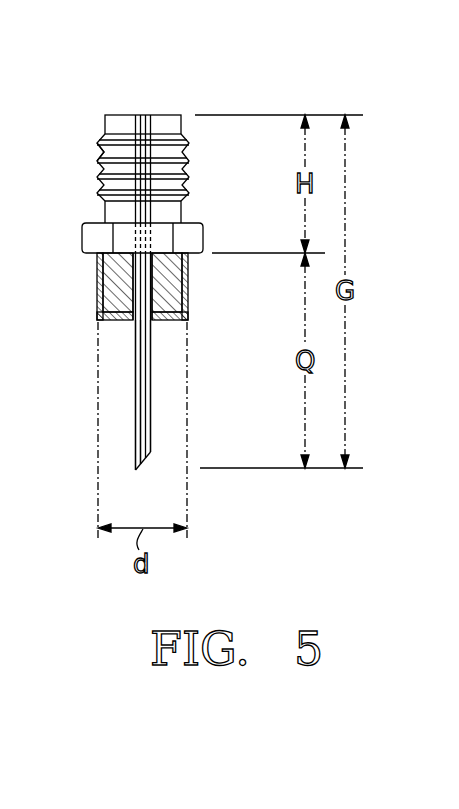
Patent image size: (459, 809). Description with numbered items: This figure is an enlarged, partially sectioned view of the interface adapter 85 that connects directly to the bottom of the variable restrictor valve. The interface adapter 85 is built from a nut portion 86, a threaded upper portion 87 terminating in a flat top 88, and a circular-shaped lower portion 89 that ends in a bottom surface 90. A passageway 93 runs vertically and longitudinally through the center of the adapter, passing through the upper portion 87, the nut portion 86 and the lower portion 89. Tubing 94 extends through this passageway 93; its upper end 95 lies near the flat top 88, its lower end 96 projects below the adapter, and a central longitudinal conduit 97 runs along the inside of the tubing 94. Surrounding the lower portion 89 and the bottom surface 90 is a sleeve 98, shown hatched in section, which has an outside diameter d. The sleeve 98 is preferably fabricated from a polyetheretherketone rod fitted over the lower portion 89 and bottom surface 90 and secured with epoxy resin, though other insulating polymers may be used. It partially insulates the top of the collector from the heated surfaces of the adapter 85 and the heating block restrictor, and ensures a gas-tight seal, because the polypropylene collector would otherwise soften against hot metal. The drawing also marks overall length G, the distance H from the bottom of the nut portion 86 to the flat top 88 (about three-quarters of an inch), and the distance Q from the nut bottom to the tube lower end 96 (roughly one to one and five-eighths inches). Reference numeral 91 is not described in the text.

The interface adapter 85 is at (200, 165).
The nut portion 86 is at (199, 239).
The threaded upper portion 87 is at (97, 162).
The flat top 88 is at (162, 115).
The circular-shaped lower portion 89 is at (97, 267).
The bottom surface 90 is at (97, 294).
The needle sheath 91 is at (134, 322).
The passageway 93 is at (185, 301).
The tubing 94 is at (151, 385).
The upper end 95 is at (141, 115).
The lower end 96 is at (137, 470).
The central longitudinal conduit 97 is at (137, 410).
The sleeve 98 is at (187, 312).